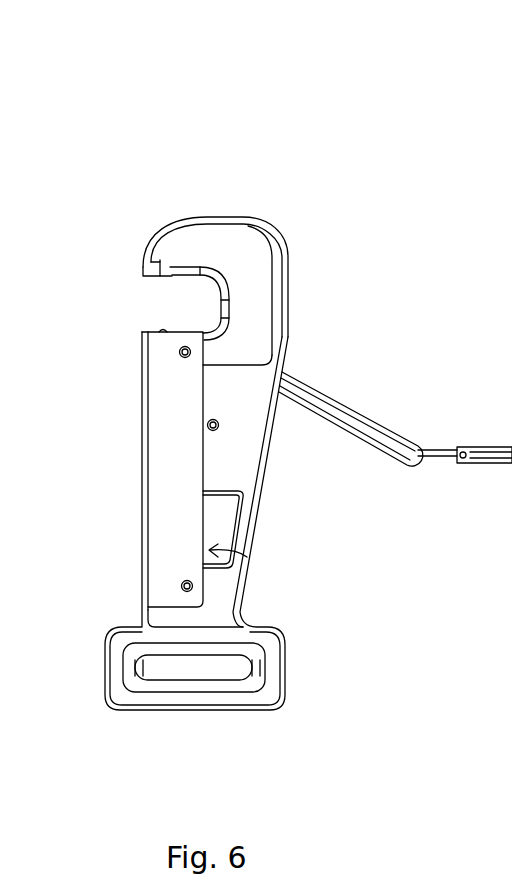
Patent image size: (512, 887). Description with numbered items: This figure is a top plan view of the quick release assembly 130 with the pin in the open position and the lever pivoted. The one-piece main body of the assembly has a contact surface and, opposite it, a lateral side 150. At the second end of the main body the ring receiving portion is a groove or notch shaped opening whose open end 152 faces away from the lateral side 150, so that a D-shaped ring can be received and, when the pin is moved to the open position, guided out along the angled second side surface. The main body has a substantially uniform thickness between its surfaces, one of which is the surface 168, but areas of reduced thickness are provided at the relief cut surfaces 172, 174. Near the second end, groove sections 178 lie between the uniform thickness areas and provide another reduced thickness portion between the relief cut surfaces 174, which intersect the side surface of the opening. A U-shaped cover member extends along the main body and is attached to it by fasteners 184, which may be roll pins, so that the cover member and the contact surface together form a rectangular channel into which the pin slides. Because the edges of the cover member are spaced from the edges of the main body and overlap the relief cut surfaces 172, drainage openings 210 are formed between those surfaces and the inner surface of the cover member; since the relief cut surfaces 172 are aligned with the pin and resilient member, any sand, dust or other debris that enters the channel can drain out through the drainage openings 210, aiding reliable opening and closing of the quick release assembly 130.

The quick release assembly 130 is at (123, 50).
The lateral side 150 is at (285, 333).
The open end 152 is at (143, 303).
The surface 168 is at (272, 362).
The relief cut surface 172 is at (225, 523).
The relief cut surface 174 is at (230, 250).
The groove section 178 is at (163, 270).
The fastener 184 is at (180, 354).
The drainage opening 210 is at (247, 557).